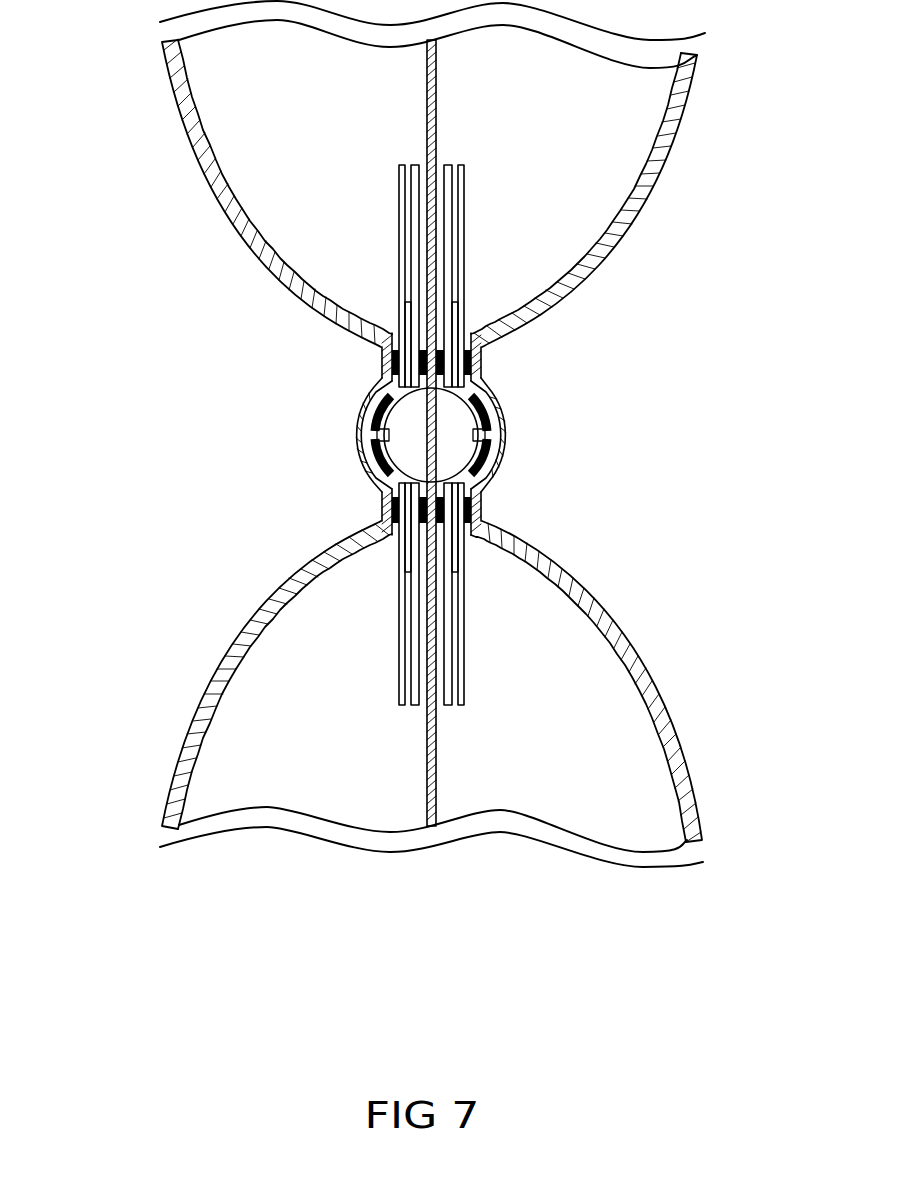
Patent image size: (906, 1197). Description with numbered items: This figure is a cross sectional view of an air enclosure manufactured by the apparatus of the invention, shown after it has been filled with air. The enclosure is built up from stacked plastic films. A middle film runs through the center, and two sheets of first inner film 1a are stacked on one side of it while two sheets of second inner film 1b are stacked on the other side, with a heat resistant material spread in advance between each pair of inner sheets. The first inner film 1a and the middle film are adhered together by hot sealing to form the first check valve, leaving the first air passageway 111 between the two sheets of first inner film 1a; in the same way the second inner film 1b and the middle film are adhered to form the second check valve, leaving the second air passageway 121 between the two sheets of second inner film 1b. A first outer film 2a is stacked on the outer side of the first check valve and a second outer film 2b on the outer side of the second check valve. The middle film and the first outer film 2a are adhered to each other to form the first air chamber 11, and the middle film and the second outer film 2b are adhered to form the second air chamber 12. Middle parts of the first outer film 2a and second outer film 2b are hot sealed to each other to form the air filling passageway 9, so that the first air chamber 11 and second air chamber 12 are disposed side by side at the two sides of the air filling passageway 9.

The first air chamber 11 is at (247, 125).
The second air chamber 12 is at (610, 133).
The first inner film 1a is at (418, 228).
The second inner film 1b is at (445, 232).
The first air passageway 111 is at (408, 288).
The second air passageway 121 is at (453, 290).
The air filling passageway 9 is at (443, 408).
The first outer film 2a is at (172, 762).
The second outer film 2b is at (693, 798).